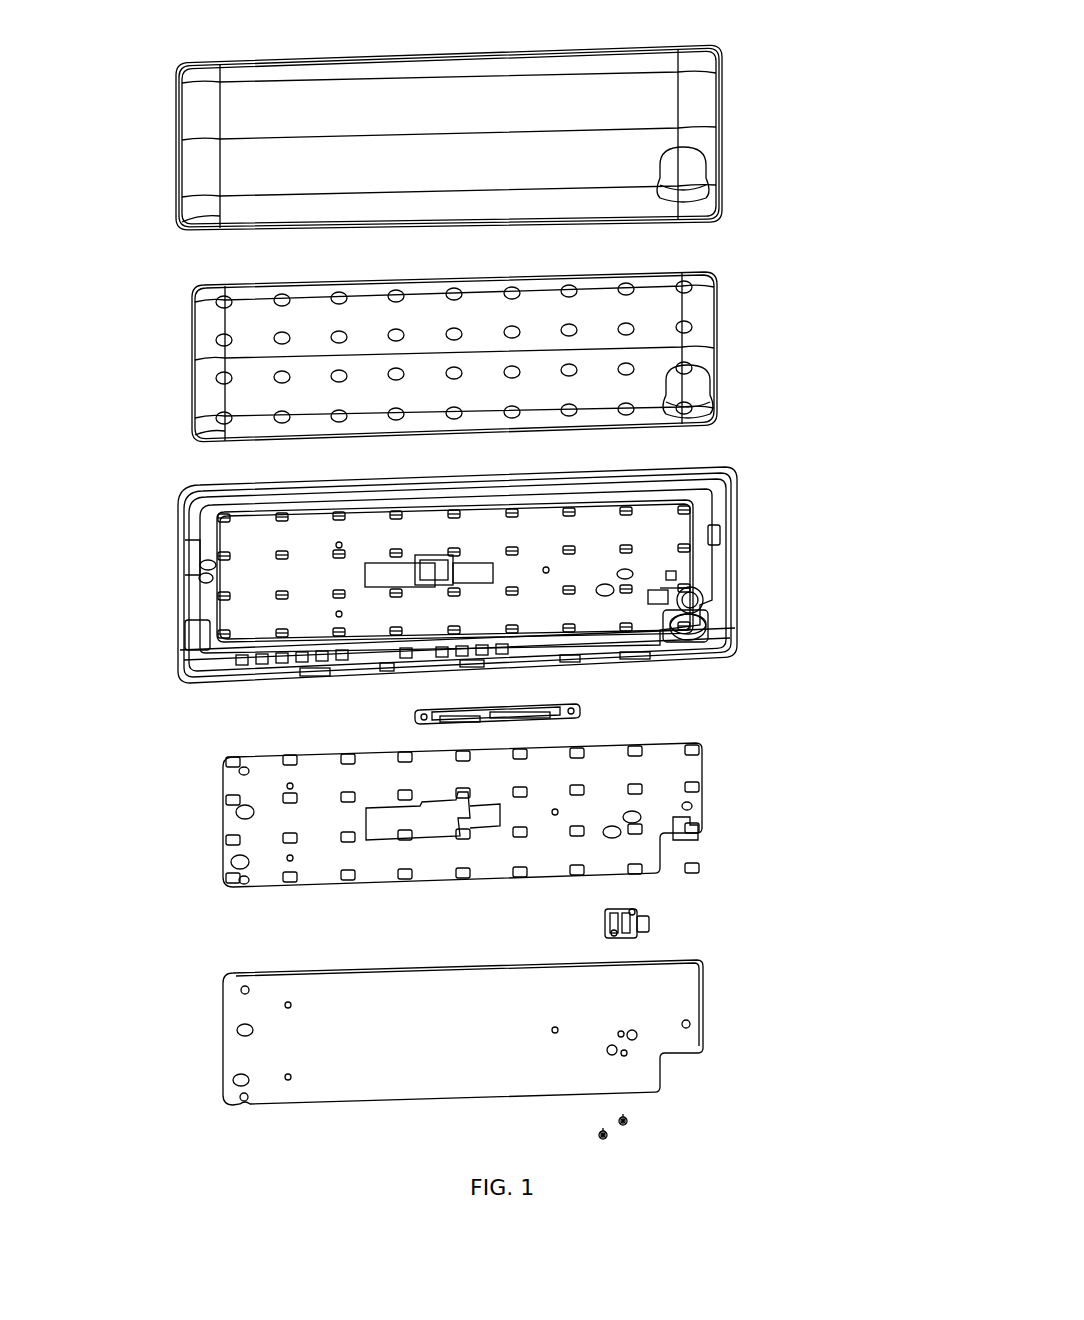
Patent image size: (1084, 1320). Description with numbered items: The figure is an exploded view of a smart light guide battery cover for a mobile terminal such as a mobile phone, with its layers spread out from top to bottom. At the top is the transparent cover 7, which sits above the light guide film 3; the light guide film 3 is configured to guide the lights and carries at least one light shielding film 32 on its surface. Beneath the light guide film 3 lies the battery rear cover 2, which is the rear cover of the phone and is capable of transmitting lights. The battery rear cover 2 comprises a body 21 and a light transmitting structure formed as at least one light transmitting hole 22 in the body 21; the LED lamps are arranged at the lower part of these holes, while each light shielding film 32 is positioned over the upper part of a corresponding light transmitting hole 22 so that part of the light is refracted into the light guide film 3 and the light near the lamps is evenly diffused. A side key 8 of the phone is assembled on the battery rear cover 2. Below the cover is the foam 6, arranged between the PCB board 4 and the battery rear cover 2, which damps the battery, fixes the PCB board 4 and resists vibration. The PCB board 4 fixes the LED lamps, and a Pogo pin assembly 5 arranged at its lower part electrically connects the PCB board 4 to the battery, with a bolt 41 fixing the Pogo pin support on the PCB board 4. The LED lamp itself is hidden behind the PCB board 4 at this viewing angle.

The transparent cover 7 is at (753, 143).
The light guide film 3 is at (501, 357).
The light shielding film 32 is at (281, 378).
The battery rear cover 2 is at (502, 550).
The body 21 is at (655, 530).
The light transmitting hole 22 is at (281, 597).
The side key 8 is at (585, 715).
The foam 6 is at (718, 800).
The Pogo pin assembly 5 is at (653, 923).
The PCB board 4 is at (718, 1000).
The bolt 41 is at (623, 1132).